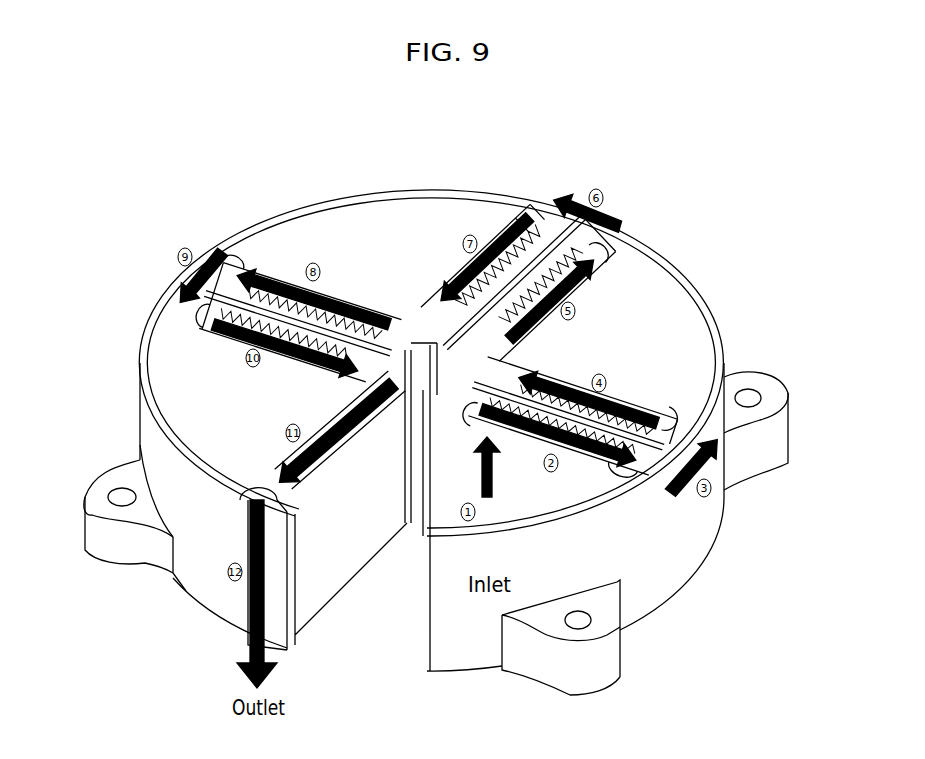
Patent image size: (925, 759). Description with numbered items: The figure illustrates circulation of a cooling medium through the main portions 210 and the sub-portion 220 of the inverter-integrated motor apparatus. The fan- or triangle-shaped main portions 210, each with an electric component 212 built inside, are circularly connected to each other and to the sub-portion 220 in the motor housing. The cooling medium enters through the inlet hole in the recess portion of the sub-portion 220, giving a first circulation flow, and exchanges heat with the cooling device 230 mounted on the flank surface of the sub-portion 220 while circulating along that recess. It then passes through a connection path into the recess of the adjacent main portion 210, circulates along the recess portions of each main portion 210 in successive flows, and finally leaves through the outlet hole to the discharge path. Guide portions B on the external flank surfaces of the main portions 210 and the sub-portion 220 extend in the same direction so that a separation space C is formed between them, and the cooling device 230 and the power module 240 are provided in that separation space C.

The main portion 210 is at (405, 195).
The electric component 212 is at (367, 250).
The sub-portion 220 is at (521, 613).
The cooling device 230 is at (500, 310).
The power module 240 is at (543, 240).
The guide portion B is at (300, 613).
The separation space C is at (628, 290).